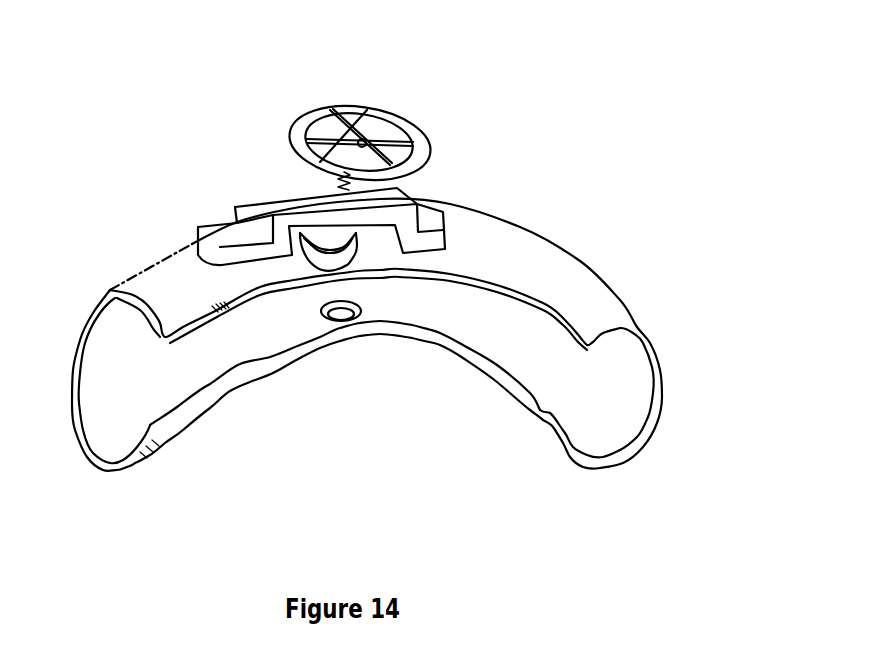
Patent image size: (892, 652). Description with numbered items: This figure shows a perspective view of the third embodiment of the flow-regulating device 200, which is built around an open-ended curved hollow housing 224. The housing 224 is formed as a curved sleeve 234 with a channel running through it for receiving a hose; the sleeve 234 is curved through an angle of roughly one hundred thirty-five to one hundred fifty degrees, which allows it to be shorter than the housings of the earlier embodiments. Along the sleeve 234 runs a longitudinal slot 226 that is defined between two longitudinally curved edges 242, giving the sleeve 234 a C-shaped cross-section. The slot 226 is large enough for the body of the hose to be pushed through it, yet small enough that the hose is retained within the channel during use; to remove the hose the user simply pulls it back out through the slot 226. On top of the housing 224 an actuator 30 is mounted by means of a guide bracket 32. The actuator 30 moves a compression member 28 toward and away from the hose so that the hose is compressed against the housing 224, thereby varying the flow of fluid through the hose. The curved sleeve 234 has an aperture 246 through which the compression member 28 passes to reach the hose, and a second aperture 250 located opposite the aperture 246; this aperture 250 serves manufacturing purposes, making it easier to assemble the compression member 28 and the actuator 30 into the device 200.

The flow-regulating device 200 is at (421, 273).
The actuator 30 is at (413, 105).
The guide bracket 32 is at (257, 205).
The open-ended curved hollow housing 224 is at (560, 243).
The curved sleeve 234 is at (620, 300).
The longitudinal slot 226 is at (466, 331).
The longitudinally curved edges 242 is at (567, 330).
The aperture 246 is at (333, 260).
The compression member 28 is at (327, 250).
The aperture 250 is at (346, 313).